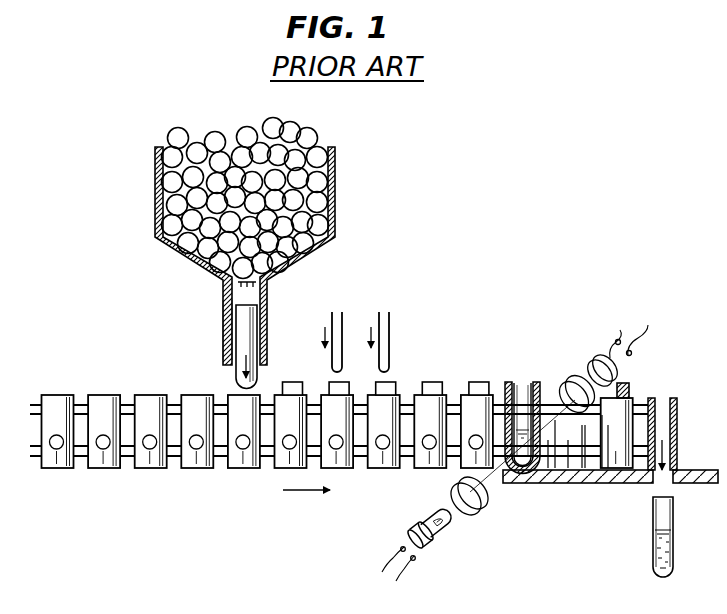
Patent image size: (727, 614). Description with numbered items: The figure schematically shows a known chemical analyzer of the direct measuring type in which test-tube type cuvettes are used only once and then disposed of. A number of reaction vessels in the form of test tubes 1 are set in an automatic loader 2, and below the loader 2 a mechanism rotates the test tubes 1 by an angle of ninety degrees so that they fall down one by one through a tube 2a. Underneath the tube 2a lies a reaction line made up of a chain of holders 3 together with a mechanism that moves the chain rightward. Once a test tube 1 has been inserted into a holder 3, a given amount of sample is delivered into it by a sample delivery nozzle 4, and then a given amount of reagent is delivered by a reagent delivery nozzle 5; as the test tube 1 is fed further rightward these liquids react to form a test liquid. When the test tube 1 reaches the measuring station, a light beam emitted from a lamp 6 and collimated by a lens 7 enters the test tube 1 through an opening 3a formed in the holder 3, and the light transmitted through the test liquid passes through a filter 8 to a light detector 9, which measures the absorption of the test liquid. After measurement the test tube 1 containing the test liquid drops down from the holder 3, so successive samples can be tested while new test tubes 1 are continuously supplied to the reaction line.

The test tube 1 is at (178, 208).
The automatic loader 2 is at (333, 196).
The tube 2a is at (225, 325).
The holder 3 is at (380, 439).
The opening 3a is at (151, 446).
The sample delivery nozzle 4 is at (342, 321).
The reagent delivery nozzle 5 is at (390, 330).
The lamp 6 is at (436, 545).
The lens 7 is at (487, 502).
The filter 8 is at (573, 388).
The light detector 9 is at (614, 380).